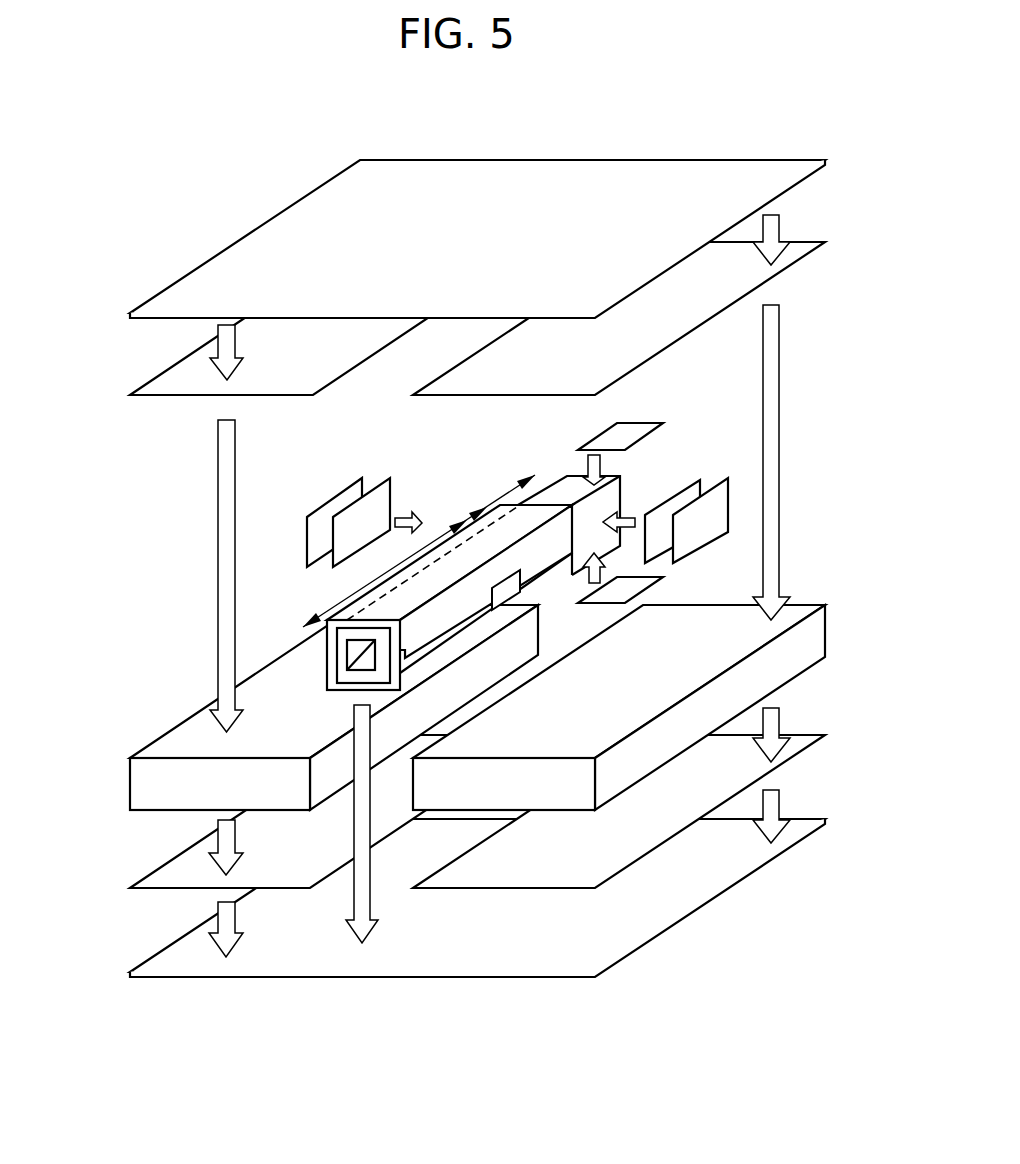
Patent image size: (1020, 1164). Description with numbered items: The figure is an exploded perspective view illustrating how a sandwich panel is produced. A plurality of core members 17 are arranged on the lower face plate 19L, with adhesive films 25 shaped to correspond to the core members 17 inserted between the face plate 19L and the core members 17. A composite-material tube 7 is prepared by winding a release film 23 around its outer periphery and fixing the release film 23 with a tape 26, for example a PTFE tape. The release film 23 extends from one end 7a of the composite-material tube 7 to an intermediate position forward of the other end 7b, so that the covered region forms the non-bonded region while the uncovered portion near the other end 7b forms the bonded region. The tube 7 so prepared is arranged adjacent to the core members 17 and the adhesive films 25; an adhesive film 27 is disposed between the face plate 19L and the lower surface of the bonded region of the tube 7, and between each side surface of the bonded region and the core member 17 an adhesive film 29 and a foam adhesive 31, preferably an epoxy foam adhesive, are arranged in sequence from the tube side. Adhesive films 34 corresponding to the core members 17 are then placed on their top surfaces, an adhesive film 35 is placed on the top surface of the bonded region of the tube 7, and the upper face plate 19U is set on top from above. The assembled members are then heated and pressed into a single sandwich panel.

The face plate 19U is at (718, 172).
The face plate 19L is at (717, 872).
The adhesive film 34 is at (178, 384).
The adhesive film 35 is at (638, 430).
The adhesive film 29 is at (375, 488).
The foam adhesive 31 is at (323, 503).
The composite-material tube 7 is at (588, 538).
The one end 7a is at (353, 677).
The other end 7b is at (620, 500).
The adhesive film 27 is at (650, 582).
The tape 26 is at (518, 593).
The release film 23 is at (467, 637).
The core member 17 is at (130, 782).
The adhesive film 25 is at (153, 880).